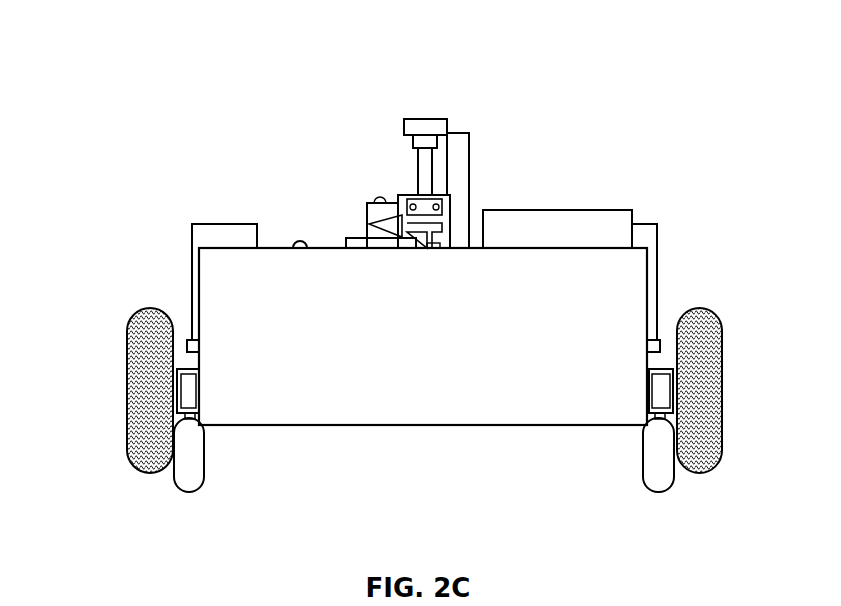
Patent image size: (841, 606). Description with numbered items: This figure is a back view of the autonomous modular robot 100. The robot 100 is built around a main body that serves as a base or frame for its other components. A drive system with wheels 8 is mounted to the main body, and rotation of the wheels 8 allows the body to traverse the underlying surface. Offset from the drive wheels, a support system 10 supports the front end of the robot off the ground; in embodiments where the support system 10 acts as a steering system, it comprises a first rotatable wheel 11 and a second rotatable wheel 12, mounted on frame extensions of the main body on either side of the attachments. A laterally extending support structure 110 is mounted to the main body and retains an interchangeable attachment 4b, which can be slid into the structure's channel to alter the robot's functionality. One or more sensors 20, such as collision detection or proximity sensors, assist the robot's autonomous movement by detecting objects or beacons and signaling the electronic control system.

The autonomous modular robot 100 is at (99, 43).
The sensors 20 is at (413, 118).
The laterally extending support structure 110 is at (404, 194).
The wheels 8 is at (143, 314).
The front support system 10 is at (226, 482).
The first rotatable wheel 11 is at (659, 494).
The second rotatable wheel 12 is at (188, 494).
The interchangeable attachment 4b is at (390, 426).